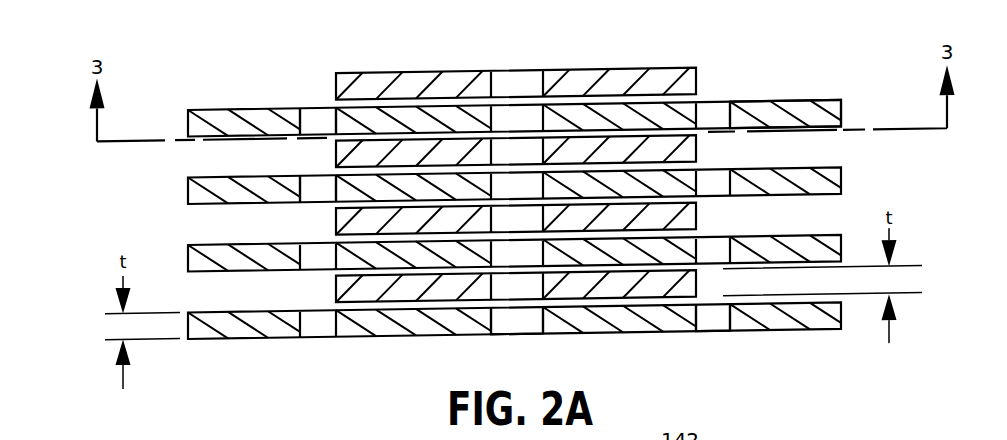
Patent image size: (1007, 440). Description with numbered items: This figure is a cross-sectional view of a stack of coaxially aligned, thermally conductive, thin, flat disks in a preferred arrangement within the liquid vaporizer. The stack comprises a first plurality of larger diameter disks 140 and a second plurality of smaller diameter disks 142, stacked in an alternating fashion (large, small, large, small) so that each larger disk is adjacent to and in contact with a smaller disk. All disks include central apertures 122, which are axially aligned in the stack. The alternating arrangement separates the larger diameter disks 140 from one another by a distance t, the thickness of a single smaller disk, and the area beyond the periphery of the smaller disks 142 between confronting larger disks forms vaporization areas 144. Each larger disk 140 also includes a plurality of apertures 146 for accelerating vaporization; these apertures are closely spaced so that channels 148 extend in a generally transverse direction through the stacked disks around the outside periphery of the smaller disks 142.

The central aperture 122 is at (503, 323).
The larger diameter disk 140 is at (802, 100).
The smaller diameter disk 142 is at (617, 68).
The vaporization area 144 is at (230, 312).
The aperture 146 is at (315, 177).
The channel 148 is at (715, 323).